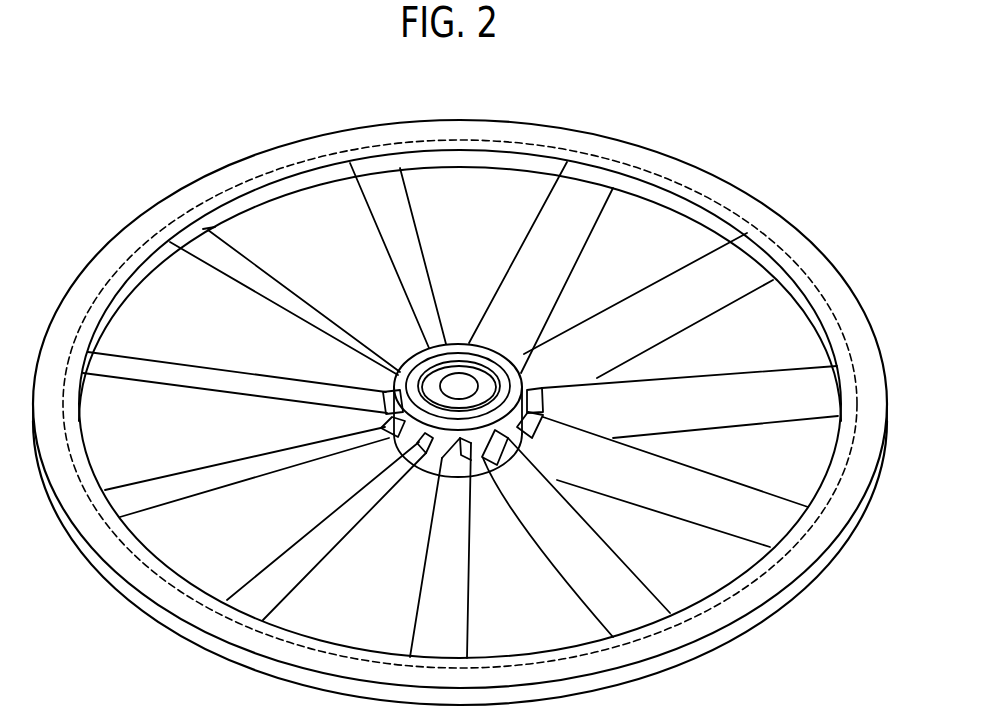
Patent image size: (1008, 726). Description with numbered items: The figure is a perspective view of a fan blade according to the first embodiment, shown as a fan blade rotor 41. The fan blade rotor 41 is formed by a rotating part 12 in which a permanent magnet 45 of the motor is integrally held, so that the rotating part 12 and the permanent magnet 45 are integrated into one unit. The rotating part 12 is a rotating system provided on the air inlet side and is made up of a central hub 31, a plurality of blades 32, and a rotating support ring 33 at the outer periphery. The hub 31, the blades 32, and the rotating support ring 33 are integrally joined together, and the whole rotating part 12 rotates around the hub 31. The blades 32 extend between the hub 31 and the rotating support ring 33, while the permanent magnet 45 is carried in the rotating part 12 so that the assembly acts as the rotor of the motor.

The rotating part 12 is at (437, 207).
The hub 31 is at (413, 352).
The blades 32 is at (183, 483).
The rotating support ring 33 is at (767, 575).
The fan blade rotor 41 is at (656, 130).
The permanent magnet 45 is at (710, 623).